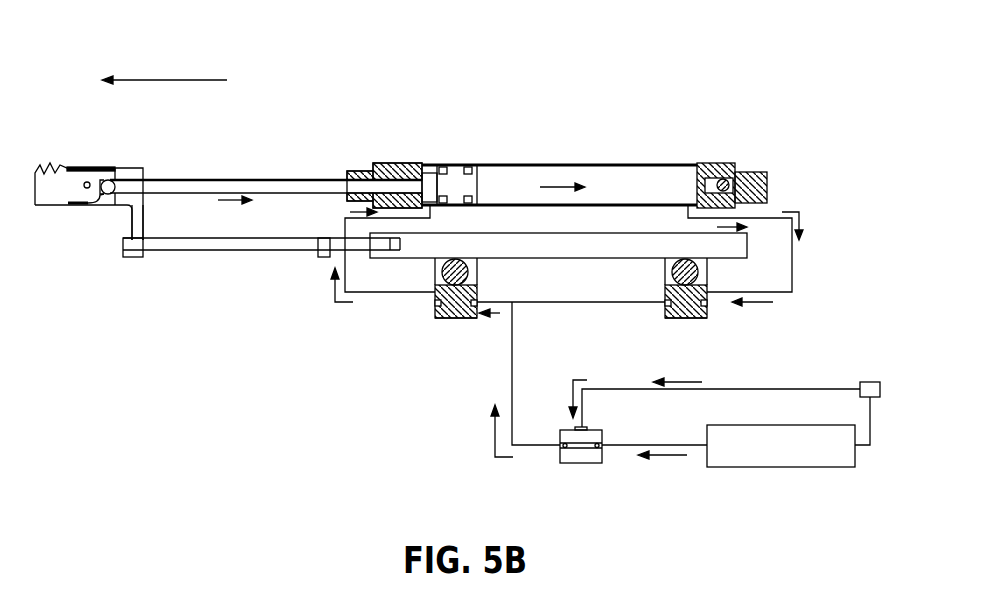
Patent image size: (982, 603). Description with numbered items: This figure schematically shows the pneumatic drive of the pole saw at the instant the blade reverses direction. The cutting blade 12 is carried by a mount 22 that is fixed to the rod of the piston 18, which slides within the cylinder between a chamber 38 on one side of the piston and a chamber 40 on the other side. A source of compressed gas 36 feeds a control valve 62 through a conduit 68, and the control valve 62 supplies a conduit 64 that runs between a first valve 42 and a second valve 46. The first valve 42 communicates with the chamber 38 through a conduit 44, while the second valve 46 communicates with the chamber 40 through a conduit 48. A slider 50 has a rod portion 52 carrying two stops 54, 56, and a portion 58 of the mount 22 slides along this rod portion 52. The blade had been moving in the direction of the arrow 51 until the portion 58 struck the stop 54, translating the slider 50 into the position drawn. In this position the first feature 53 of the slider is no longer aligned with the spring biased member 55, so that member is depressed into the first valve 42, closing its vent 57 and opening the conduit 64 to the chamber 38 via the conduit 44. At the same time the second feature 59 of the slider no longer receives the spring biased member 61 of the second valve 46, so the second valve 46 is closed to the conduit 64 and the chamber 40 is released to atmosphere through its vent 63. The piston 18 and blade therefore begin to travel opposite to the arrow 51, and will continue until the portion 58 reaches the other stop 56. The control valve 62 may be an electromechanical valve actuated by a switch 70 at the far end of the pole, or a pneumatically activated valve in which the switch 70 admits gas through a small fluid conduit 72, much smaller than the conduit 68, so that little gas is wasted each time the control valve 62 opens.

The cutting blade 12 is at (57, 185).
The piston 18 is at (457, 183).
The mount 22 is at (139, 160).
The source of compressed gas 36 is at (780, 467).
The chamber 38 is at (408, 173).
The chamber 40 is at (640, 185).
The first valve 42 is at (447, 318).
The conduit 44 is at (338, 266).
The second valve 46 is at (697, 318).
The conduit 48 is at (795, 268).
The slider 50 is at (543, 242).
The arrow 51 is at (165, 80).
The rod portion 52 is at (214, 252).
The first feature 53 is at (457, 259).
The stop 54 is at (125, 258).
The spring biased member 55 is at (480, 268).
The stop 56 is at (322, 237).
The vent 57 is at (433, 302).
The portion 58 is at (145, 220).
The second feature 59 is at (700, 265).
The spring biased member 61 is at (672, 263).
The control valve 62 is at (590, 463).
The vent 63 is at (707, 316).
The conduit 64 is at (512, 378).
The conduit 68 is at (640, 445).
The switch 70 is at (866, 382).
The fluid conduit 72 is at (786, 389).